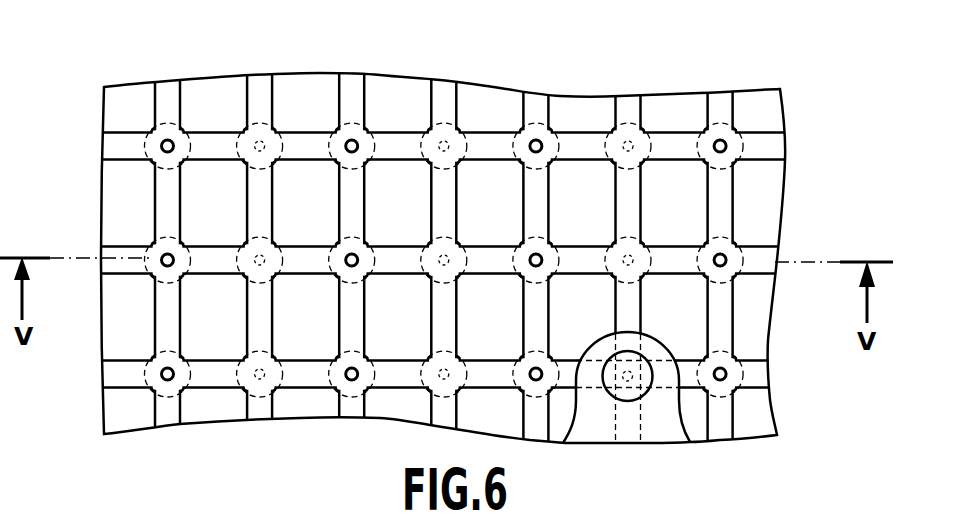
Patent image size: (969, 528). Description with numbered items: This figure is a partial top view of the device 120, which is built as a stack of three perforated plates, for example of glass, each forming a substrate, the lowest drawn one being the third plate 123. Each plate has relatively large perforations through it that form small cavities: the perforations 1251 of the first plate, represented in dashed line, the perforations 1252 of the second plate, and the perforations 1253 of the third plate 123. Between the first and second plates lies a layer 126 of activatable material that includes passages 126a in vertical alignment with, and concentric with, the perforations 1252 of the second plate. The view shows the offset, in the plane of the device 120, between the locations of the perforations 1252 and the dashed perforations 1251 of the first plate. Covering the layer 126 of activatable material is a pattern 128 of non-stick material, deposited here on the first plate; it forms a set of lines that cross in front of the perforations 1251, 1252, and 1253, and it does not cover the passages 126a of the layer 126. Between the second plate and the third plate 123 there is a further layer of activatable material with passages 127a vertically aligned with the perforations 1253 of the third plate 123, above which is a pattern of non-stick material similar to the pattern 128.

The device 120 is at (488, 231).
The third plate 123 is at (658, 430).
The layer of activatable material 126 is at (302, 93).
The passages 126a is at (161, 144).
The passages 127a is at (627, 381).
The pattern of non-stick material 128 is at (168, 84).
The perforations 1251 is at (647, 255).
The perforations 1252 is at (151, 243).
The perforations 1253 is at (603, 376).